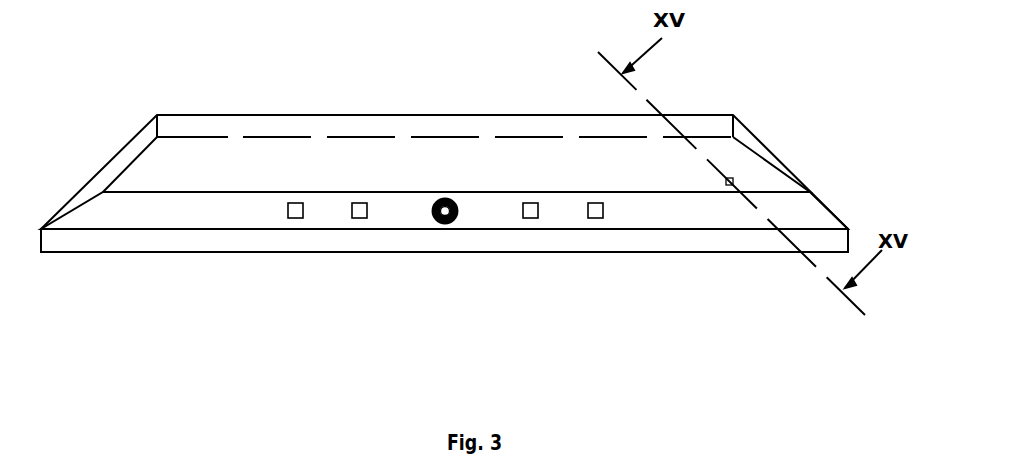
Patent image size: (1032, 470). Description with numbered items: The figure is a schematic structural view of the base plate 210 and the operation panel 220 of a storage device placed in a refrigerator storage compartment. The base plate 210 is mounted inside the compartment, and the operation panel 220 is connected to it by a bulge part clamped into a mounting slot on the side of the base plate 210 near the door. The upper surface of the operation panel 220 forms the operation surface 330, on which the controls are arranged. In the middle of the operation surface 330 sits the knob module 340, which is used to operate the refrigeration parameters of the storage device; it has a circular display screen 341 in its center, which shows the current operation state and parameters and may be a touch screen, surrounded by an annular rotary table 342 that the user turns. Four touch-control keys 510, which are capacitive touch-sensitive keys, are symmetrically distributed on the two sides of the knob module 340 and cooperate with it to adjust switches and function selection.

The base plate 210 is at (242, 180).
The operation panel 220 is at (163, 240).
The operation surface 330 is at (688, 215).
The knob module 340 is at (466, 302).
The display screen 341 is at (445, 220).
The annular rotary table 342 is at (443, 213).
The touch-control keys 510 is at (297, 210).